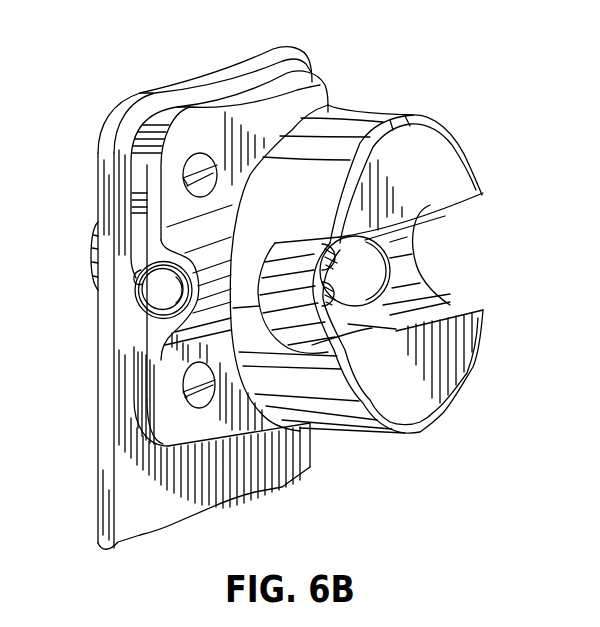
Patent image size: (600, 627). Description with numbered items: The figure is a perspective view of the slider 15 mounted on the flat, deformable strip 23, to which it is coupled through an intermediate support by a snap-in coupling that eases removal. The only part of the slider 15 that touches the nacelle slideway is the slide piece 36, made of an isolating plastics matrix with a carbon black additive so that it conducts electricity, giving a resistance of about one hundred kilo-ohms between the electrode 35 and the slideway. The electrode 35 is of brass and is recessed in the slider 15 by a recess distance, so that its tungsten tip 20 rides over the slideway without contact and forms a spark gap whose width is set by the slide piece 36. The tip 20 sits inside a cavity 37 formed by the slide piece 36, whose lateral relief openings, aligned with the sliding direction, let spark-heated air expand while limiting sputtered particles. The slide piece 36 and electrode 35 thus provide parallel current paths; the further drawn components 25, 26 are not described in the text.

The slider 15 is at (297, 314).
The electrode tip 20 is at (383, 267).
The deformable strip 23 is at (162, 503).
The pivot boss 25 is at (162, 298).
The mounting bracket 26 is at (213, 432).
The electrode 35 is at (92, 243).
The slide piece 36 is at (380, 115).
The cavity 37 is at (482, 312).